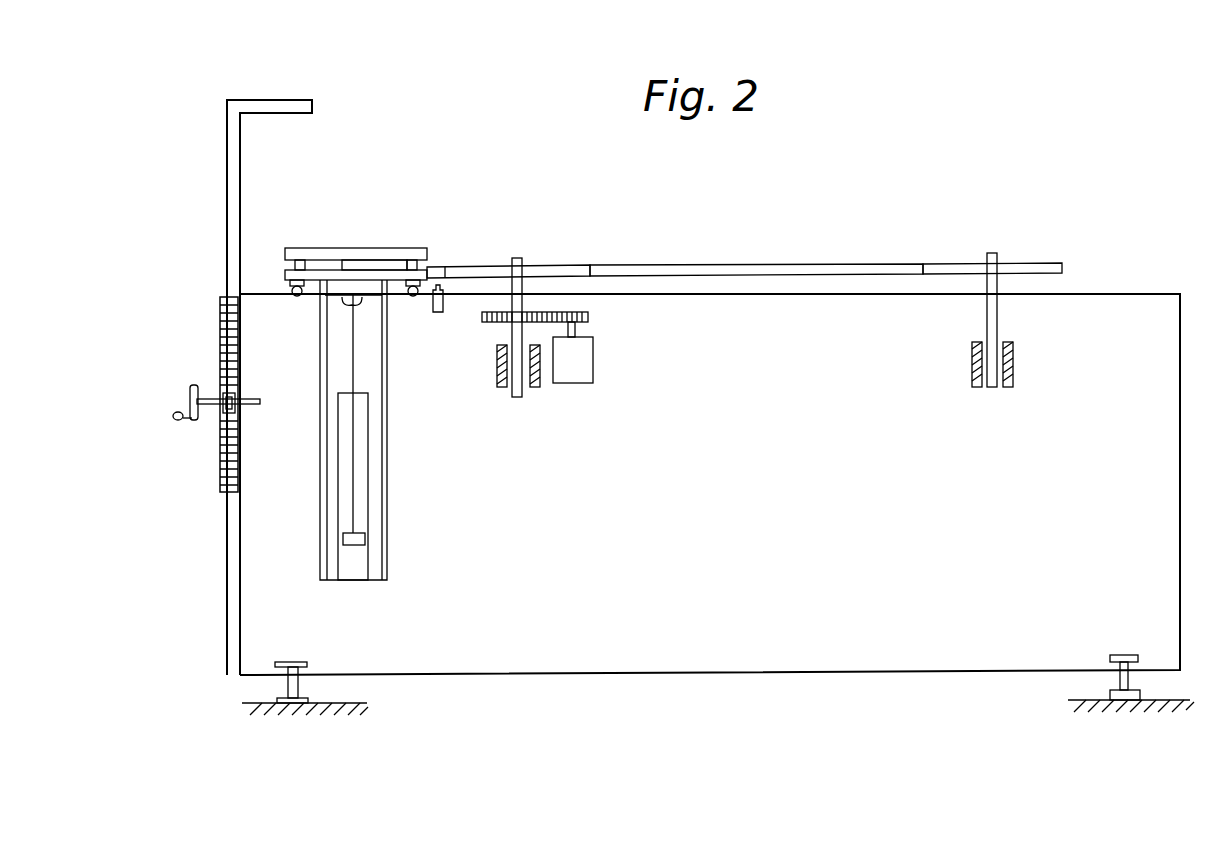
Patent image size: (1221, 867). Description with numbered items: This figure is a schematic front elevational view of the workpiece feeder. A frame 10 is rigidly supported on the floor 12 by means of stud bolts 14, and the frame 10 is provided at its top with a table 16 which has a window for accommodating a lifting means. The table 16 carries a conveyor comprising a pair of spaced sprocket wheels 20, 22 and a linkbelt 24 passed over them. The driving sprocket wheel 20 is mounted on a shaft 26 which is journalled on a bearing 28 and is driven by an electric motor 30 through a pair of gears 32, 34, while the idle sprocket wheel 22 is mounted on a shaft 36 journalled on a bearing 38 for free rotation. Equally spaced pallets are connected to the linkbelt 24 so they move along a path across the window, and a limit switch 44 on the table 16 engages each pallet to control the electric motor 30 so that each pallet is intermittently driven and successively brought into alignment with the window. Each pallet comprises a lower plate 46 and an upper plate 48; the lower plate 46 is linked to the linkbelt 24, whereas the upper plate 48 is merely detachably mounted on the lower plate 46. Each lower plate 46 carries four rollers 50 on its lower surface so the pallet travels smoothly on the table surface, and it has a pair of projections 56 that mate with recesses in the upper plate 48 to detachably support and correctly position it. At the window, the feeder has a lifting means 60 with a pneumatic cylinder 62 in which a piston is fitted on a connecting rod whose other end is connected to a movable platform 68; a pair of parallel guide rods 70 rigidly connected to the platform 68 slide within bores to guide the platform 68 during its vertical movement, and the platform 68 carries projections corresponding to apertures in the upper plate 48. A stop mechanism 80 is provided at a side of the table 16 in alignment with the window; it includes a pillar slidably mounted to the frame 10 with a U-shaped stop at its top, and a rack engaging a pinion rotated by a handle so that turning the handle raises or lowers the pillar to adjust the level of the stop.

The frame 10 is at (1179, 304).
The floor 12 is at (1082, 705).
The stud bolts 14 is at (299, 685).
The table 16 is at (1118, 292).
The driving sprocket wheel 20 is at (492, 268).
The idle sprocket wheel 22 is at (1032, 263).
The linkbelt 24 is at (806, 265).
The shaft 26 is at (522, 398).
The bearing 28 is at (500, 387).
The electric motor 30 is at (580, 383).
The gear 32 is at (589, 313).
The gear 34 is at (492, 345).
The shaft 36 is at (998, 313).
The bearing 38 is at (1013, 380).
The limit switch 44 is at (433, 316).
The lower plate 46 is at (285, 272).
The upper plate 48 is at (372, 248).
The rollers 50 is at (290, 297).
The projections 56 is at (420, 263).
The lifting means 60 is at (395, 417).
The pneumatic cylinder 62 is at (358, 580).
The movable platform 68 is at (335, 287).
The guide rods 70 is at (388, 548).
The stop mechanism 80 is at (214, 239).